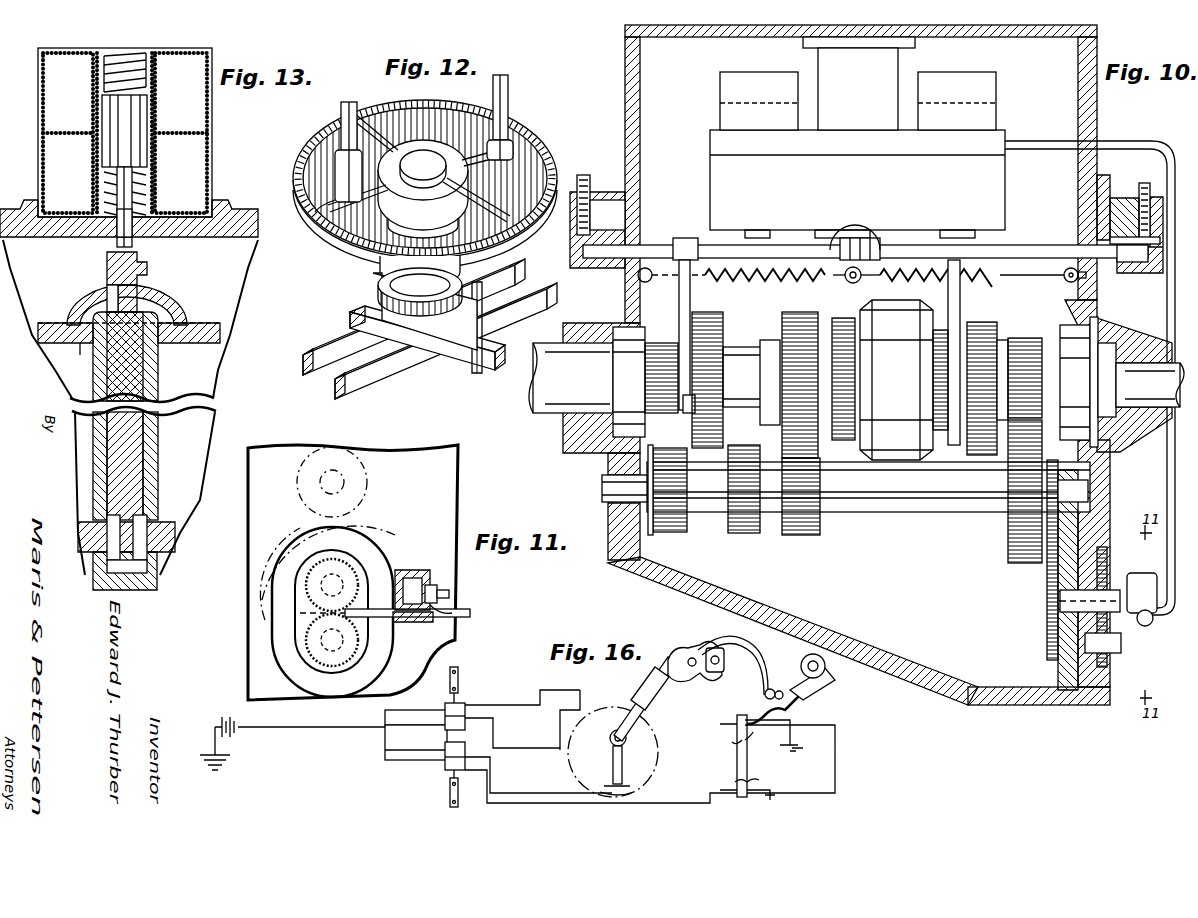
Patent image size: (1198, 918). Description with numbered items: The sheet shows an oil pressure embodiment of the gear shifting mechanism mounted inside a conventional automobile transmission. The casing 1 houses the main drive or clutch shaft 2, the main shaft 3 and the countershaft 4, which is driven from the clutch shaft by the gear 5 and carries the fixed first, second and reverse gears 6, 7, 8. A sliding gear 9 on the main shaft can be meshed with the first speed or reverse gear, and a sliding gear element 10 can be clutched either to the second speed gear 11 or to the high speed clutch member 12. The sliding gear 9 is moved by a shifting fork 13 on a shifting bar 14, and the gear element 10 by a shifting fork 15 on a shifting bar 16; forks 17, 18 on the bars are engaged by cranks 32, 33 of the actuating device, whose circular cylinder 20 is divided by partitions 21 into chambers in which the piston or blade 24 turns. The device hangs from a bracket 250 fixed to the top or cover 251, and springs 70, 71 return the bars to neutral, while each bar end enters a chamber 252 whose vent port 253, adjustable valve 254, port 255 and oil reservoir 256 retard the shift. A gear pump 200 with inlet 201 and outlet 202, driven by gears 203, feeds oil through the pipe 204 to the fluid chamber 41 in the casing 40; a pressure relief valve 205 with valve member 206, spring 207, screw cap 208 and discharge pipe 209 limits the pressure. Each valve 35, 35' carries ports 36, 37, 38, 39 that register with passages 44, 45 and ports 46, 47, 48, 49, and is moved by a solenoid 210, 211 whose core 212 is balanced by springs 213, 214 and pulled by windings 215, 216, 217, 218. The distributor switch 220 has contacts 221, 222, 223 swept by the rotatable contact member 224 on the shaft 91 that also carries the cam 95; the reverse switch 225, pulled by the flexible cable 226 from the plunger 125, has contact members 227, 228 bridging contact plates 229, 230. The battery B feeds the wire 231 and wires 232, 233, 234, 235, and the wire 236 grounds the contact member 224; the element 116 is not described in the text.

In FIG. 10, the casing 1 is at (743, 576).
In FIG. 10, the main drive or clutch shaft 2 is at (1165, 413).
In FIG. 10, the main shaft 3 is at (735, 352).
In FIG. 10, the countershaft 4 is at (903, 519).
In FIG. 10, the gear 5 is at (1007, 432).
In FIG. 10, the first gear 6 is at (750, 533).
In FIG. 10, the second gear 7 is at (791, 533).
In FIG. 10, the reverse gear 8 is at (671, 533).
In FIG. 10, the sliding gear 9 is at (712, 312).
In FIG. 10, the sliding gear element 10 is at (904, 380).
In FIG. 10, the second speed gear 11 is at (805, 312).
In FIG. 10, the third or high speed clutch member 12 is at (985, 322).
In FIG. 10, the shifting fork 13 is at (679, 300).
In FIG. 12, the shifting bar 14 is at (428, 380).
In FIG. 10, the shifting bar 14 is at (665, 245).
In FIG. 10, the shifting fork 15 is at (960, 293).
In FIG. 12, the shifting bar 16 is at (340, 352).
In FIG. 10, the shifting bar 16 is at (1020, 250).
In FIG. 12, the fork 17 is at (500, 373).
In FIG. 10, the fork 17 is at (838, 228).
In FIG. 12, the fork 18 is at (352, 316).
In FIG. 10, the circular cylinder 20 is at (1000, 190).
In FIG. 12, the partitions 21 is at (466, 150).
In FIG. 12, the piston or blade 24 is at (395, 148).
In FIG. 12, the crank 32 is at (470, 340).
In FIG. 12, the crank 33 is at (368, 293).
In FIG. 13, the valve 35 is at (138, 416).
In FIG. 12, the valve 35 is at (322, 157).
In FIG. 16, the valve 35 is at (468, 683).
In FIG. 12, the valve 35' is at (521, 117).
In FIG. 16, the valve 35' is at (439, 788).
In FIG. 13, the port 36 is at (107, 276).
In FIG. 13, the port 37 is at (147, 268).
In FIG. 13, the port 38 is at (108, 540).
In FIG. 13, the port 39 is at (175, 532).
In FIG. 13, the casing 40 is at (30, 234).
In FIG. 13, the fluid chamber 41 is at (191, 260).
In FIG. 13, the passage 44 is at (86, 345).
In FIG. 13, the passage 45 is at (172, 302).
In FIG. 13, the port 46 is at (94, 518).
In FIG. 13, the port 47 is at (148, 514).
In FIG. 13, the port 48 is at (104, 570).
In FIG. 13, the port 49 is at (157, 570).
In FIG. 10, the spring 70 is at (757, 279).
In FIG. 10, the spring 71 is at (890, 282).
In FIG. 16, the shaft 91 is at (660, 688).
In FIG. 16, the cam 95 is at (691, 652).
In FIG. 16, the cable 116 is at (752, 660).
In FIG. 16, the plunger 125 is at (826, 684).
In FIG. 11, the gear pump 200 is at (333, 568).
In FIG. 10, the gear pump 200 is at (1115, 568).
In FIG. 11, the inlet 201 is at (297, 625).
In FIG. 10, the inlet 201 is at (1082, 648).
In FIG. 11, the outlet 202 is at (380, 617).
In FIG. 10, the outlet 202 is at (1149, 627).
In FIG. 10, the gears 203 is at (1008, 533).
In FIG. 11, the pipe 204 is at (470, 611).
In FIG. 10, the pipe 204 is at (1130, 143).
In FIG. 11, the pressure relief valve 205 is at (420, 622).
In FIG. 10, the pressure relief valve 205 is at (1149, 581).
In FIG. 11, the valve member 206 is at (452, 613).
In FIG. 11, the spring 207 is at (435, 586).
In FIG. 11, the screw cap 208 is at (415, 570).
In FIG. 11, the discharge pipe 209 is at (449, 594).
In FIG. 16, the solenoid 210 is at (446, 705).
In FIG. 10, the solenoid 210 is at (759, 101).
In FIG. 16, the solenoid 211 is at (445, 755).
In FIG. 10, the solenoid 211 is at (957, 101).
In FIG. 13, the core 212 is at (152, 104).
In FIG. 13, the spring 213 is at (132, 62).
In FIG. 13, the spring 214 is at (104, 181).
In FIG. 13, the winding 215 is at (43, 106).
In FIG. 12, the winding 215 is at (488, 230).
In FIG. 16, the winding 215 is at (465, 712).
In FIG. 10, the winding 215 is at (720, 84).
In FIG. 13, the winding 216 is at (43, 160).
In FIG. 16, the winding 216 is at (465, 730).
In FIG. 10, the winding 216 is at (720, 116).
In FIG. 16, the winding 217 is at (465, 750).
In FIG. 10, the winding 217 is at (996, 84).
In FIG. 16, the winding 218 is at (455, 775).
In FIG. 10, the winding 218 is at (996, 116).
In FIG. 16, the distributor switch 220 is at (663, 696).
In FIG. 16, the contact 221 is at (626, 782).
In FIG. 16, the contact 222 is at (666, 712).
In FIG. 16, the contact 223 is at (590, 700).
In FIG. 16, the rotatable contact member 224 is at (622, 748).
In FIG. 16, the reverse switch 225 is at (737, 766).
In FIG. 16, the flexible cable 226 is at (790, 692).
In FIG. 16, the upper contact member 227 is at (754, 742).
In FIG. 16, the lower contact member 228 is at (756, 773).
In FIG. 16, the contact plates 229 is at (727, 718).
In FIG. 16, the contact plates 230 is at (745, 798).
In FIG. 16, the wire 231 is at (286, 730).
In FIG. 16, the wire 232 is at (409, 741).
In FIG. 16, the wire 233 is at (435, 743).
In FIG. 16, the wire 234 is at (410, 704).
In FIG. 16, the wire 235 is at (396, 760).
In FIG. 16, the wire 236 is at (668, 730).
In FIG. 10, the bracket 250 is at (858, 89).
In FIG. 10, the top or cover 251 is at (746, 44).
In FIG. 10, the chamber 252 is at (586, 277).
In FIG. 10, the vent port 253 is at (1124, 219).
In FIG. 10, the valve 254 is at (1138, 200).
In FIG. 10, the port 255 is at (640, 230).
In FIG. 10, the oil reservoir 256 is at (640, 210).
In FIG. 16, the battery B is at (292, 731).